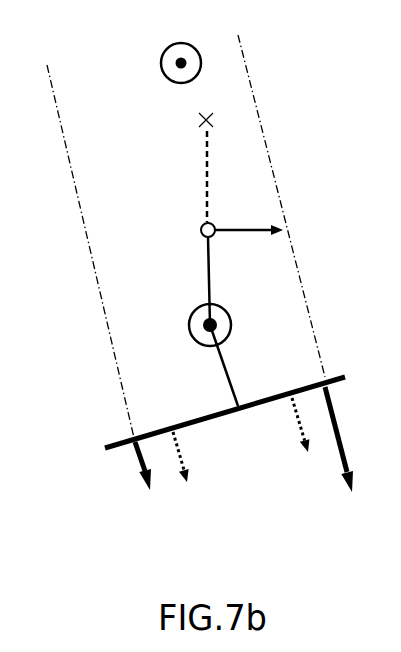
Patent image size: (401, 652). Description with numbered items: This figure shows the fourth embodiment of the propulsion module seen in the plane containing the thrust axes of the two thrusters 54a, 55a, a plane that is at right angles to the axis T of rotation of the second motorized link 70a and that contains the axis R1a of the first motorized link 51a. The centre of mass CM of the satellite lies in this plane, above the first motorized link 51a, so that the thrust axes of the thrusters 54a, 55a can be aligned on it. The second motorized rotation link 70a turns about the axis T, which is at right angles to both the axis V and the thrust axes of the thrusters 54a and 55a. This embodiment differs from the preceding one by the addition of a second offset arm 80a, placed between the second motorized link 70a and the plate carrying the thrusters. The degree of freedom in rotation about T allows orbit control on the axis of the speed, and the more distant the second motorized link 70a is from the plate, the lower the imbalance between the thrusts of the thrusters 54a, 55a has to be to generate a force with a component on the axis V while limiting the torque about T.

The axis T is at (165, 63).
The centre of mass CM is at (232, 117).
The axis R1a is at (265, 227).
The first motorized link 51a is at (200, 225).
The second motorized rotation link 70a is at (189, 327).
The second offset arm 80a is at (228, 380).
The thruster 54a is at (137, 467).
The thruster 55a is at (347, 472).